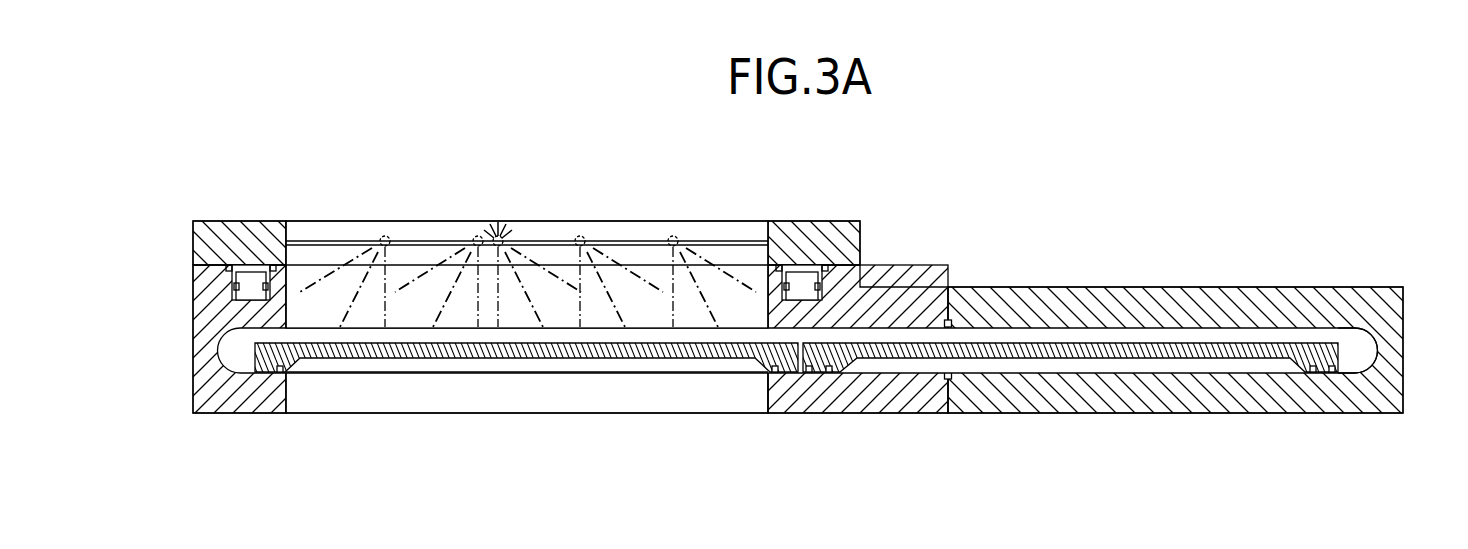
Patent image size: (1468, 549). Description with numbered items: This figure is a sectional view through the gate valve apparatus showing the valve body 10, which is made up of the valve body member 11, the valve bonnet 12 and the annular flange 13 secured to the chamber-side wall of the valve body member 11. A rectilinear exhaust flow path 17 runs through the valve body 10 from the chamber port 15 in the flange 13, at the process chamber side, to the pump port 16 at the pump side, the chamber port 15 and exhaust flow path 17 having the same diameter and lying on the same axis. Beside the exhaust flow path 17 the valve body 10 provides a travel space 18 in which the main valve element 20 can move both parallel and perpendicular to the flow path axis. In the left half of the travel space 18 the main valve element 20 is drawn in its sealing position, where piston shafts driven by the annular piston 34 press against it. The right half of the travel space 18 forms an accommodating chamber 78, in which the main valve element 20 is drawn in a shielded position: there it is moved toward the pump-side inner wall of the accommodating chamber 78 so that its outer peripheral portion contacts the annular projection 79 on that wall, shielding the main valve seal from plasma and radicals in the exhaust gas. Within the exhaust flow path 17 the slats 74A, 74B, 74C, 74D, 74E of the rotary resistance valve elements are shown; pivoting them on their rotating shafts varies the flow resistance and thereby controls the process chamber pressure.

The valve body 10 is at (186, 213).
The valve body member 11 is at (833, 415).
The valve bonnet 12 is at (1152, 415).
The flange 13 is at (268, 221).
The chamber port 15 is at (756, 227).
The pump port 16 is at (744, 398).
The exhaust flow path 17 is at (405, 372).
The travel space 18 is at (238, 351).
The main valve element 20 is at (542, 352).
The annular piston 34 is at (250, 280).
The slat 74A is at (333, 241).
The slat 74B is at (437, 241).
The slat 74C is at (542, 241).
The slat 74D is at (630, 241).
The slat 74E is at (710, 241).
The accommodating chamber 78 is at (1350, 336).
The annular projection 79 is at (808, 373).